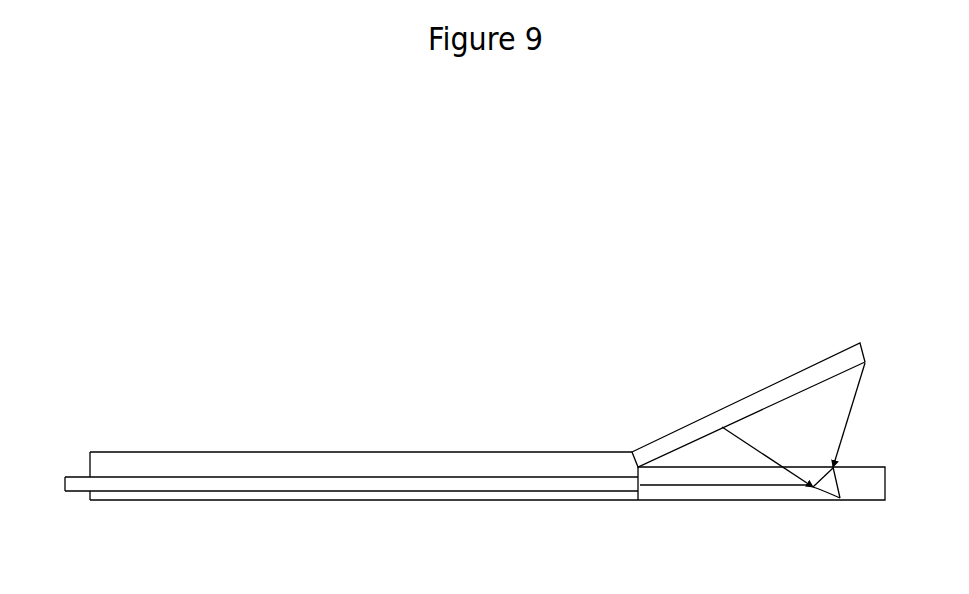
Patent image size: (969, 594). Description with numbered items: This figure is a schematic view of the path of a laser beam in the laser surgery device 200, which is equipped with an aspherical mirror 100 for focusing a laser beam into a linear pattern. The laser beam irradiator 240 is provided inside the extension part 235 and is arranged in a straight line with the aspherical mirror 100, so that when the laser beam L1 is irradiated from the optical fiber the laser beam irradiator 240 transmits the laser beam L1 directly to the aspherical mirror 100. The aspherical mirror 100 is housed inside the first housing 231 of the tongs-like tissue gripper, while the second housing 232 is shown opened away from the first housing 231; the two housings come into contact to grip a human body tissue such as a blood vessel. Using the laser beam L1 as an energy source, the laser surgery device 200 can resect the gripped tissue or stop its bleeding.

The laser surgery device 200 is at (385, 385).
The extension part 235 is at (205, 452).
The laser beam irradiator 240 is at (253, 486).
The first housing 231 is at (872, 496).
The laser beam L1 is at (653, 486).
The second housing 232 is at (803, 380).
The aspherical mirror 100 is at (828, 500).